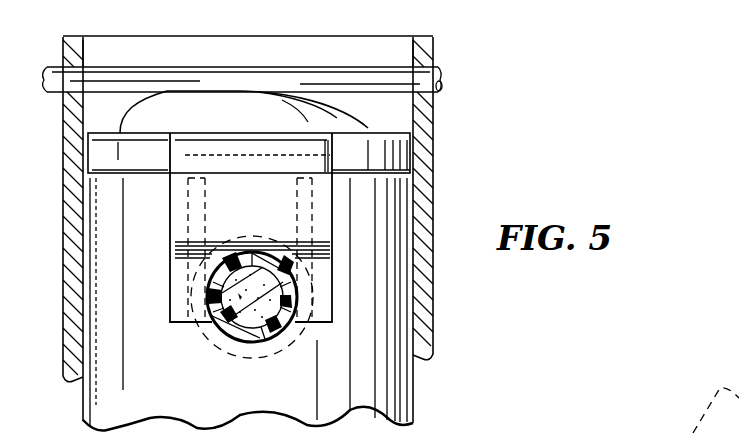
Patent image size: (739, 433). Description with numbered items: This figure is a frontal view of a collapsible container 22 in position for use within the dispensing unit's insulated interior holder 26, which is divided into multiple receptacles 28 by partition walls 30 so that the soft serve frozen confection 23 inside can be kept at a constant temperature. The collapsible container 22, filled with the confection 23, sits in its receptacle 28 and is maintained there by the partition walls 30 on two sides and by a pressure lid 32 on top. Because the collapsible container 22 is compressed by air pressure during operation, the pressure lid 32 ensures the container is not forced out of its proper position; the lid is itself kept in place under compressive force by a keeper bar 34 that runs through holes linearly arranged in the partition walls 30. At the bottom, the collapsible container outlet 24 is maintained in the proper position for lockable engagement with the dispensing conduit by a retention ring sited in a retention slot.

The collapsible container 22 is at (405, 395).
The soft serve frozen confection 23 is at (262, 318).
The collapsible container outlet 24 is at (300, 264).
The insulated interior holder 26 is at (283, 47).
The receptacle 28 is at (116, 47).
The partition wall 30 is at (425, 193).
The pressure lid 32 is at (368, 128).
The keeper bar 34 is at (425, 78).